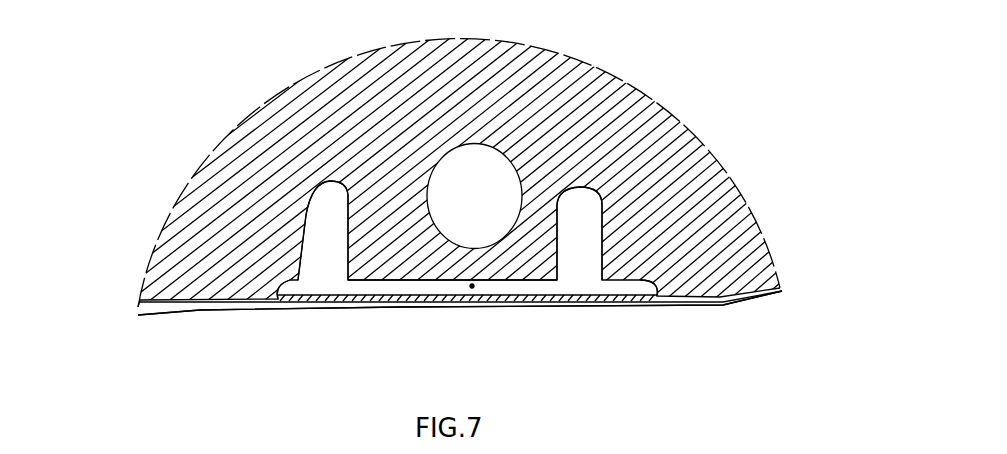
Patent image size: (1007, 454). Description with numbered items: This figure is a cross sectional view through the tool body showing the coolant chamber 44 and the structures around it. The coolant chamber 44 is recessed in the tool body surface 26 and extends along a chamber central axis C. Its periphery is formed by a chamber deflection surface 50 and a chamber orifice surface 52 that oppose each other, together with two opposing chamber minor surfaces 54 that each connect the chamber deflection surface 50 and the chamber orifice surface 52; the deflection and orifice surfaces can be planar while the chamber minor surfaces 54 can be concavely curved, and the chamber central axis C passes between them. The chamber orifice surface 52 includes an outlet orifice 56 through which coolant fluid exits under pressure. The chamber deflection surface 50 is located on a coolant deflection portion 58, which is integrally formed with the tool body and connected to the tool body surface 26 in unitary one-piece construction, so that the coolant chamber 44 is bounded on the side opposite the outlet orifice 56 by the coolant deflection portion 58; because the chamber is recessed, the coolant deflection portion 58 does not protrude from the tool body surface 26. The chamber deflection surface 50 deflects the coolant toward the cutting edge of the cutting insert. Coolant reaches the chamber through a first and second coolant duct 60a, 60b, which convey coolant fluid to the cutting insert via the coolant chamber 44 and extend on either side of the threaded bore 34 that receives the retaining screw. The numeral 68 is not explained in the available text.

The threaded bore 34 is at (493, 142).
The coolant deflection portion 58 is at (417, 285).
The first coolant duct 60a is at (588, 235).
The second coolant duct 60b is at (320, 248).
The tool body surface 26 is at (450, 326).
The liner layer 68 is at (230, 305).
The chamber minor surfaces 54 is at (278, 294).
The outlet orifice 56 is at (325, 268).
The chamber deflection surface 50 is at (403, 296).
The chamber central axis C is at (472, 288).
The chamber orifice surface 52 is at (508, 281).
The coolant chamber 44 is at (546, 305).